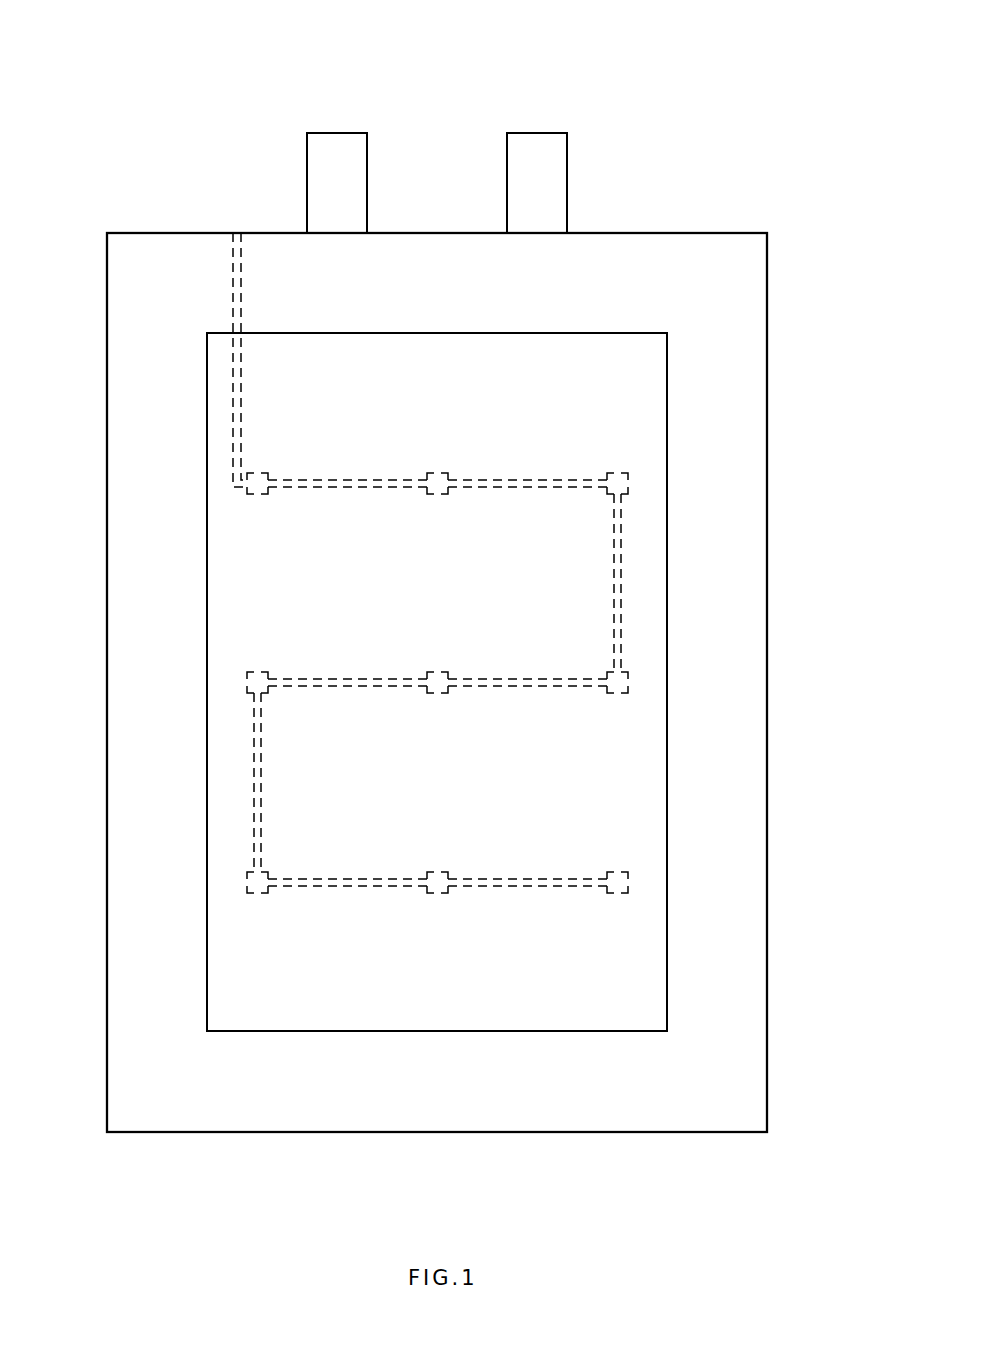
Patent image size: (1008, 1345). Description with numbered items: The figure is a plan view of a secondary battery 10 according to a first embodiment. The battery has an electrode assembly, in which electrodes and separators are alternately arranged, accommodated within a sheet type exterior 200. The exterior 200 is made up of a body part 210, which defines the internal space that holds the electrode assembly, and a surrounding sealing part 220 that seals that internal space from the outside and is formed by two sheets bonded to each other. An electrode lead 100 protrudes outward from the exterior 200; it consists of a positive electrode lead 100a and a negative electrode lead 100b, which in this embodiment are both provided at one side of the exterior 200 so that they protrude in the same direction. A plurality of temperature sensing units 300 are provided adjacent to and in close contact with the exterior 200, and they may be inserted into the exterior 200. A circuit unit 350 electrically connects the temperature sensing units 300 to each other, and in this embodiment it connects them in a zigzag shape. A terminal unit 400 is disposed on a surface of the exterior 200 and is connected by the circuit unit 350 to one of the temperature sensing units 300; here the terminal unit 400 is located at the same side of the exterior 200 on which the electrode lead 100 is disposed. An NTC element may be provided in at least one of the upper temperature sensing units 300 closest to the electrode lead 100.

The secondary battery 10 is at (791, 624).
The electrode lead 100 is at (832, 8).
The positive electrode lead 100a is at (335, 148).
The negative electrode lead 100b is at (535, 148).
The sheet type exterior 200 is at (832, 125).
The body part 210 is at (643, 984).
The sealing part 220 is at (757, 1075).
The temperature sensing units 300 is at (253, 493).
The circuit unit 350 is at (357, 485).
The terminal unit 400 is at (241, 233).